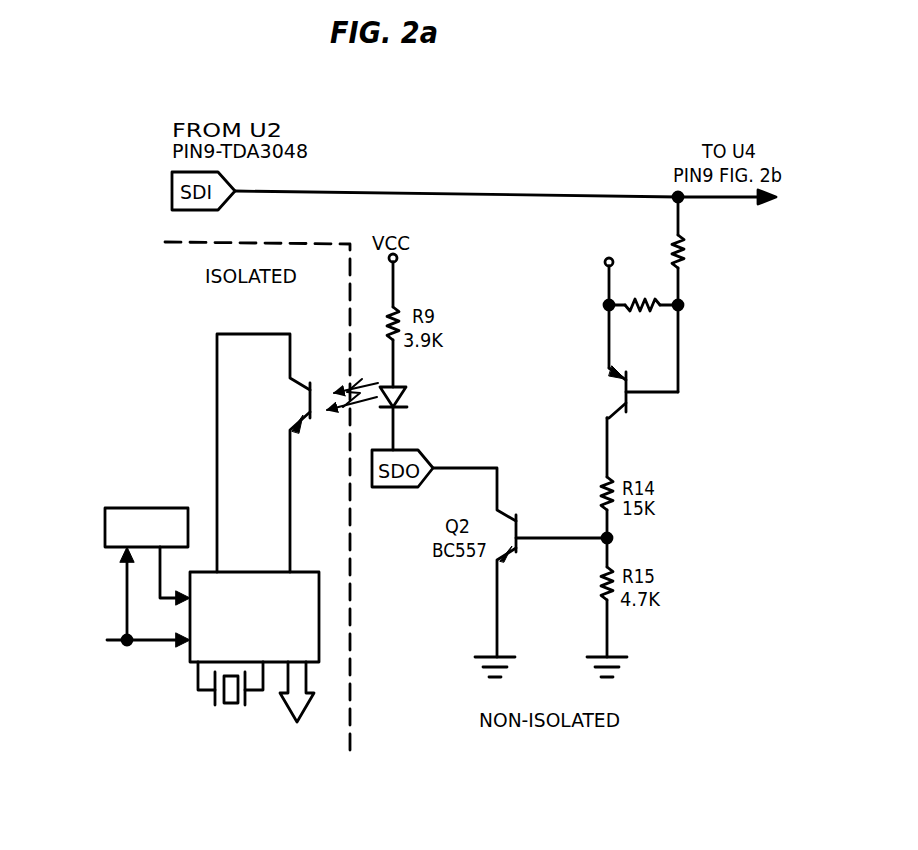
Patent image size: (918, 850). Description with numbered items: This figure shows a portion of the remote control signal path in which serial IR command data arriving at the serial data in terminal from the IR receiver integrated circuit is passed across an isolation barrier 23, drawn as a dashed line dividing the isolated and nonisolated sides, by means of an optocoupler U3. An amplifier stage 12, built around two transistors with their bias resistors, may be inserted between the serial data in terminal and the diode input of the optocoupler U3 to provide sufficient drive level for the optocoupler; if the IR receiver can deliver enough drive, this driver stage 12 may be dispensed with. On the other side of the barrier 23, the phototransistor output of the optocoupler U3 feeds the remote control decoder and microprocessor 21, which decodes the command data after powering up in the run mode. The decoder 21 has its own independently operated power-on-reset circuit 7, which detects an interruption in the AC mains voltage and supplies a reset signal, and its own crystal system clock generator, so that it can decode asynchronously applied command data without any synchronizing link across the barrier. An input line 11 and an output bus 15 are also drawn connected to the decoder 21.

The power-on-reset circuit 7 is at (170, 507).
The input line 11 is at (112, 645).
The amplifier stage 12 is at (534, 365).
The output bus 15 is at (305, 720).
The remote control decoder and microprocessor 21 is at (242, 572).
The isolation barrier 23 is at (350, 668).
The optocoupler U3 is at (288, 399).